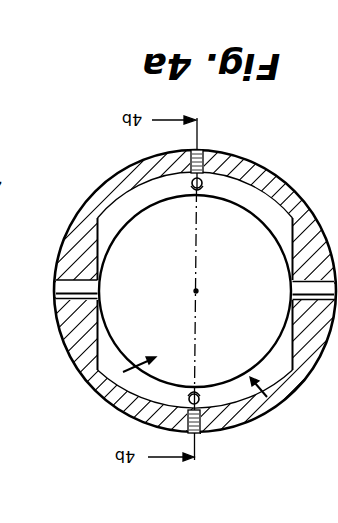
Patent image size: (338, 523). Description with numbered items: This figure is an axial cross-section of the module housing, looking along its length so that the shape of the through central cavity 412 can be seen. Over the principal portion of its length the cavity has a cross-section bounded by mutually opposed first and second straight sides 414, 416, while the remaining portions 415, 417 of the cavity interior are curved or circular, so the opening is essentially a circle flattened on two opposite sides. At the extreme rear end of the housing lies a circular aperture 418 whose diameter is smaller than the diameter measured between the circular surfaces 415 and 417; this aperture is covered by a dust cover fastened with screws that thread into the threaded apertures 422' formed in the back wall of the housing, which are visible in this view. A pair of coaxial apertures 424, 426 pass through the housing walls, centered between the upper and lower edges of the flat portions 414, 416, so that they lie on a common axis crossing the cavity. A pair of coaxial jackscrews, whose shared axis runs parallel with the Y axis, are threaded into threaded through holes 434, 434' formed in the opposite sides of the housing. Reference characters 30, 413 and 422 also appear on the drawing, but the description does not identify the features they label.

The central axis 30 is at (195, 291).
The through central cavity 412 is at (272, 405).
The housing ring 413 is at (250, 188).
The first straight side 414 is at (291, 246).
The curved portion of cavity interior 415 is at (275, 375).
The second straight side 416 is at (97, 340).
The curved portion of cavity interior 417 is at (128, 188).
The circular aperture 418 is at (100, 392).
The upper electrode ball 422 is at (213, 202).
The threaded apertures 422' is at (212, 378).
The coaxial aperture 424 is at (292, 294).
The coaxial aperture 426 is at (85, 283).
The threaded through hole 434 is at (215, 440).
The threaded through hole 434' is at (216, 142).